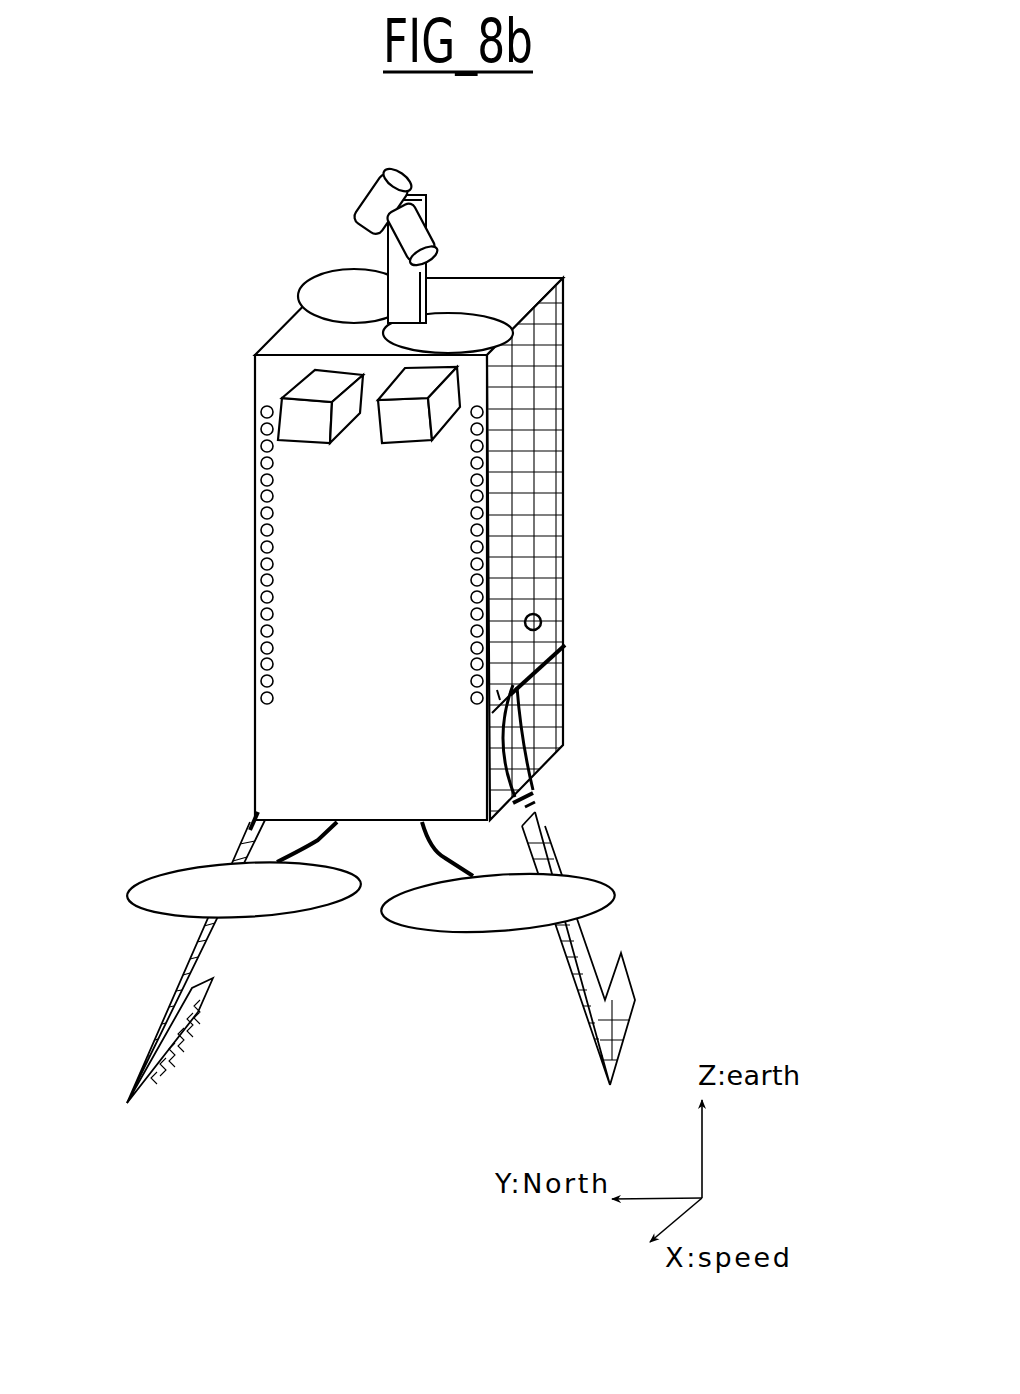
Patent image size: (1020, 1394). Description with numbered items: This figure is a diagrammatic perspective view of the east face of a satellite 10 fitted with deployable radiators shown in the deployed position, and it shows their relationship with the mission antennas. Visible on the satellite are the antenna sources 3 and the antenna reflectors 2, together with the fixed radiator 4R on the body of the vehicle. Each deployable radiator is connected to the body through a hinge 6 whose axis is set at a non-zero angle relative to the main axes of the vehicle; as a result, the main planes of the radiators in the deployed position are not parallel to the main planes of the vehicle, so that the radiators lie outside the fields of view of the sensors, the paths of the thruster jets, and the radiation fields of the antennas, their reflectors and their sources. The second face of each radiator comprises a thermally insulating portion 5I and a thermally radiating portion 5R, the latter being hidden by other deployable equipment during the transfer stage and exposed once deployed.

The satellite body 10 is at (238, 713).
The antenna reflector 2 is at (354, 294).
The antenna source 3 is at (388, 186).
The hinge 6 is at (510, 684).
The fixed radiator 4R is at (552, 692).
The insulating portion 5I is at (196, 1024).
The radiating portion 5R is at (616, 992).